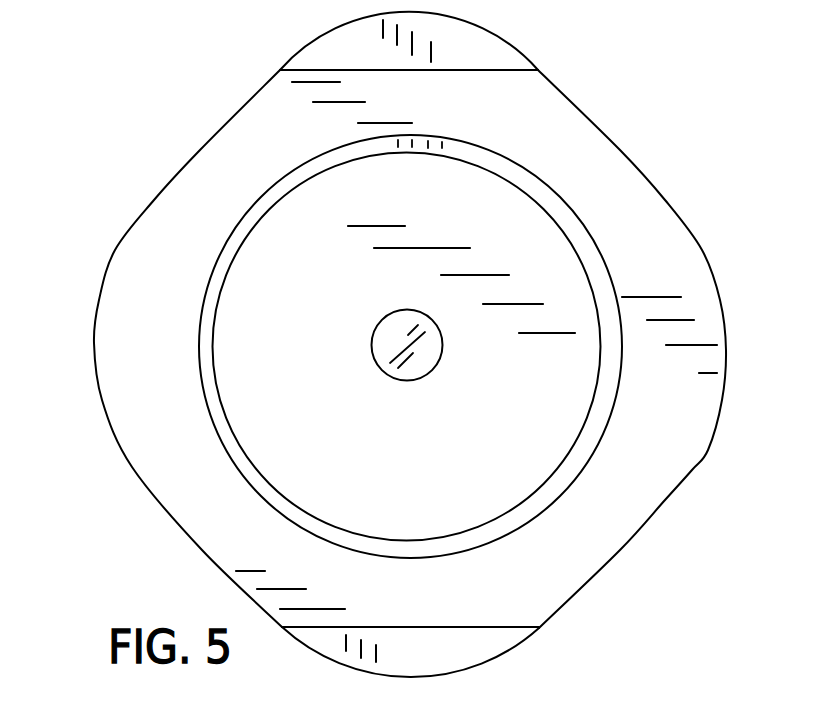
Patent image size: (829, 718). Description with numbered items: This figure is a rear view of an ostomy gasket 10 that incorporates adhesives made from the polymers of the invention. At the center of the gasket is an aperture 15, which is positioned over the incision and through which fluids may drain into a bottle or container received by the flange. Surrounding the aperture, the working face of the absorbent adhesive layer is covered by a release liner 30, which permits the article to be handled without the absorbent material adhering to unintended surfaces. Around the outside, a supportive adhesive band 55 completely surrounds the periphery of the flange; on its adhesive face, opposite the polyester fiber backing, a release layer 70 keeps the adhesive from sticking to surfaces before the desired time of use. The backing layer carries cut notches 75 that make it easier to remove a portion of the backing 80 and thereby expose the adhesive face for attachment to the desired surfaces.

The ostomy gasket 10 is at (138, 159).
The aperture 15 is at (441, 352).
The release liner 30 is at (441, 452).
The supportive adhesive band 55 is at (644, 182).
The release layer 70 is at (671, 439).
The cut notches 75 is at (539, 70).
The portion of the backing 80 is at (475, 52).